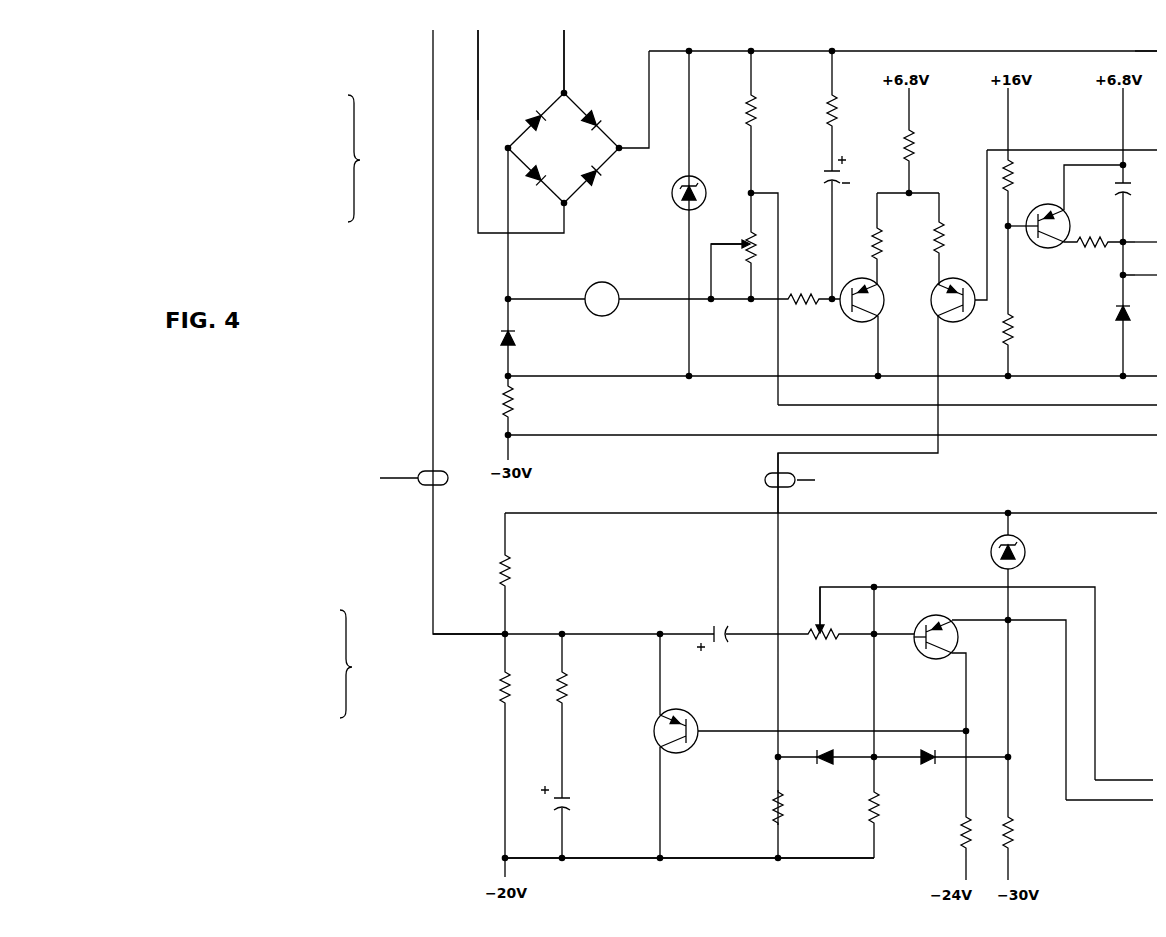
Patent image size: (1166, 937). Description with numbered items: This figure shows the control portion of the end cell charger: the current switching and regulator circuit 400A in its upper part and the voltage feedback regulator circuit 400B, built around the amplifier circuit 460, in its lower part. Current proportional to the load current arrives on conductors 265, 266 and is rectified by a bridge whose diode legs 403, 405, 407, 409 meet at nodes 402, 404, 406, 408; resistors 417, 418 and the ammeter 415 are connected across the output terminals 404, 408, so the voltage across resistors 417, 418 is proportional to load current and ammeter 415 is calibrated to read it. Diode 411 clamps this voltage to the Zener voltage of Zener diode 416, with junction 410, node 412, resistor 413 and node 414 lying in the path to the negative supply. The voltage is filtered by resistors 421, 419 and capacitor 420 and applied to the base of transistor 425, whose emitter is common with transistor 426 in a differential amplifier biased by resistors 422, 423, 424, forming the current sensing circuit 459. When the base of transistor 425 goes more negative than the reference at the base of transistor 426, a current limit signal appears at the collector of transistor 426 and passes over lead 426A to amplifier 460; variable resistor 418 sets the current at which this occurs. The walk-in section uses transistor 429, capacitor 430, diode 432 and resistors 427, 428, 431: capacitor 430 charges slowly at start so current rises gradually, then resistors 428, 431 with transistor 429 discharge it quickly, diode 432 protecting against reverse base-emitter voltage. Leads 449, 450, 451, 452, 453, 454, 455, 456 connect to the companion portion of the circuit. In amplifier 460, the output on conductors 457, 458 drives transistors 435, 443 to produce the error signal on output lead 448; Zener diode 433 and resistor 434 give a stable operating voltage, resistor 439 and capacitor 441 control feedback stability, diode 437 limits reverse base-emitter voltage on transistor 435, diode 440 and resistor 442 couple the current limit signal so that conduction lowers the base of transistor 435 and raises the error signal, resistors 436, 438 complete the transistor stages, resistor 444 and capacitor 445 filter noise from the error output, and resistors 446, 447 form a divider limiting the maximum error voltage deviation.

The conductor 265 is at (582, 61).
The conductor 266 is at (497, 75).
The current switching and regulator circuit 400A is at (250, 203).
The voltage feedback regulator circuit 400B is at (245, 702).
The bridge junction 402 is at (580, 86).
The diode 403 is at (597, 120).
The output terminal 404 is at (635, 157).
The diode 405 is at (596, 175).
The bridge junction 406 is at (581, 211).
The diode 407 is at (536, 175).
The output terminal 408 is at (498, 140).
The diode 409 is at (529, 120).
The junction 410 is at (516, 290).
The diode 411 is at (486, 340).
The junction 412 is at (512, 372).
The resistor 413 is at (488, 401).
The junction 414 is at (512, 431).
The ammeter 415 is at (602, 290).
The Zener diode 416 is at (701, 187).
The resistor 417 is at (732, 110).
The variable resistor 418 is at (729, 243).
The resistor 419 is at (812, 110).
The capacitor 420 is at (812, 178).
The resistor 421 is at (803, 290).
The bias resistor 422 is at (926, 145).
The bias resistor 423 is at (858, 243).
The bias resistor 424 is at (955, 237).
The transistor 425 is at (857, 310).
The transistor 426 is at (953, 310).
The current limit output lead 426A is at (952, 483).
The resistor 427 is at (1026, 175).
The resistor 428 is at (1027, 329).
The transistor 429 is at (1039, 235).
The capacitor 430 is at (1105, 188).
The resistor 431 is at (1091, 251).
The diode 432 is at (1102, 316).
The Zener diode 433 is at (1027, 552).
The resistor 434 is at (1027, 832).
The transistor 435 is at (935, 648).
The resistor 436 is at (943, 832).
The diode 437 is at (920, 769).
The resistor 438 is at (852, 807).
The resistor 439 is at (823, 626).
The diode 440 is at (823, 769).
The capacitor 441 is at (722, 626).
The resistor 442 is at (754, 807).
The transistor 443 is at (679, 723).
The resistor 444 is at (580, 687).
The capacitor 445 is at (580, 807).
The resistor 446 is at (524, 570).
The resistor 447 is at (481, 687).
The error signal output lead 448 is at (428, 57).
The output lead 449 is at (1134, 54).
The output lead 450 is at (1103, 156).
The output lead 451 is at (1111, 237).
The output lead 452 is at (1155, 277).
The output lead 453 is at (1147, 382).
The output lead 454 is at (1142, 411).
The output lead 455 is at (1142, 441).
The output lead 456 is at (1142, 519).
The conductor 457 is at (1137, 779).
The conductor 458 is at (1138, 805).
The current sensing circuit 459 is at (903, 40).
The amplifier circuit 460 is at (689, 878).